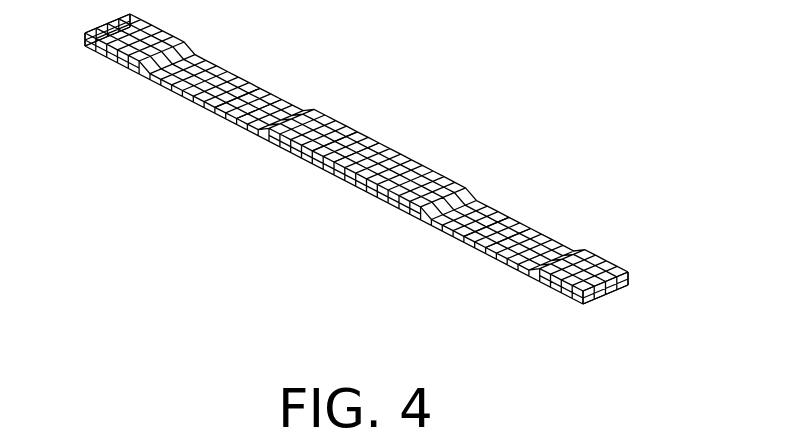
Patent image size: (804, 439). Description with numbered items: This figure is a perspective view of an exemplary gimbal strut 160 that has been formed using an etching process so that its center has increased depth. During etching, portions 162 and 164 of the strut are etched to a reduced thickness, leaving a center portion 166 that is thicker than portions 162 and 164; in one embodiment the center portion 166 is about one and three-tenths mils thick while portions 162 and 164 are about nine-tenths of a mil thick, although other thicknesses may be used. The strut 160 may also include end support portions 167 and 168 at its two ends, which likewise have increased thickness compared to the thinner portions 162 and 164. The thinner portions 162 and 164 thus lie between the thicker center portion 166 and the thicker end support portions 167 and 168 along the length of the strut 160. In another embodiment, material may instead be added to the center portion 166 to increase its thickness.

The strut 160 is at (420, 100).
The portion 162 is at (230, 102).
The portion 164 is at (483, 250).
The center portion 166 is at (335, 173).
The end support portion 167 is at (107, 47).
The end support portion 168 is at (558, 290).